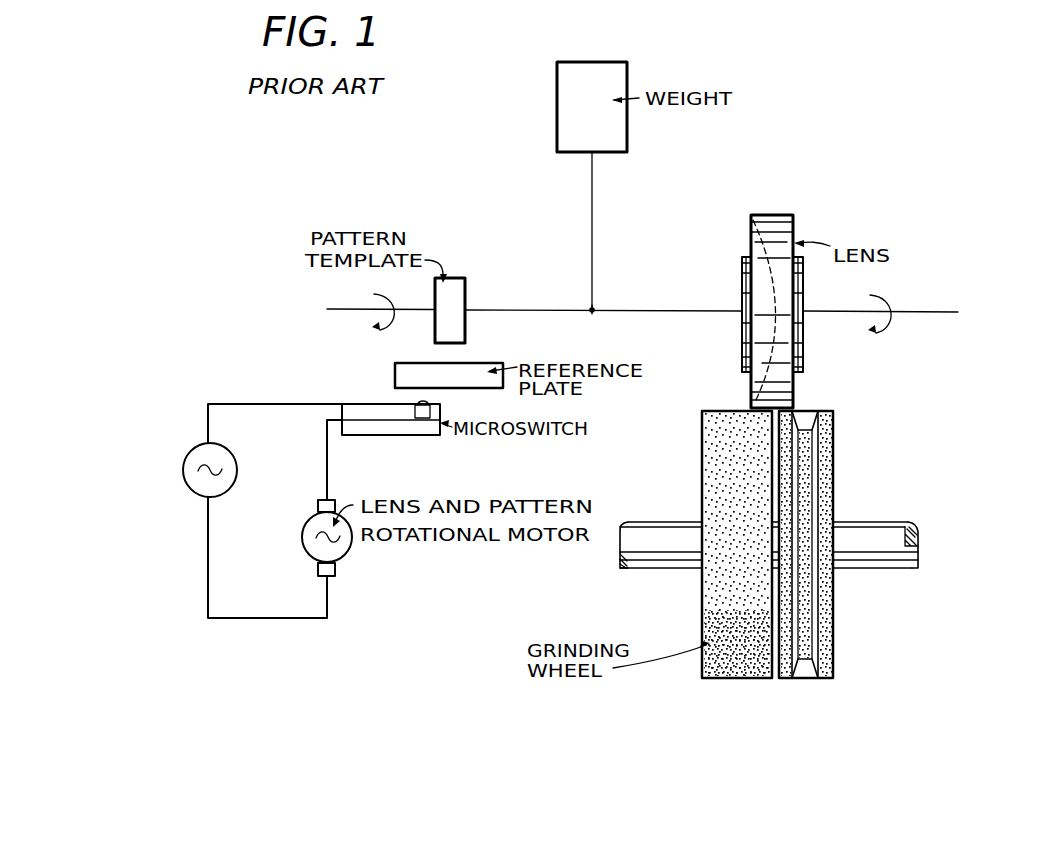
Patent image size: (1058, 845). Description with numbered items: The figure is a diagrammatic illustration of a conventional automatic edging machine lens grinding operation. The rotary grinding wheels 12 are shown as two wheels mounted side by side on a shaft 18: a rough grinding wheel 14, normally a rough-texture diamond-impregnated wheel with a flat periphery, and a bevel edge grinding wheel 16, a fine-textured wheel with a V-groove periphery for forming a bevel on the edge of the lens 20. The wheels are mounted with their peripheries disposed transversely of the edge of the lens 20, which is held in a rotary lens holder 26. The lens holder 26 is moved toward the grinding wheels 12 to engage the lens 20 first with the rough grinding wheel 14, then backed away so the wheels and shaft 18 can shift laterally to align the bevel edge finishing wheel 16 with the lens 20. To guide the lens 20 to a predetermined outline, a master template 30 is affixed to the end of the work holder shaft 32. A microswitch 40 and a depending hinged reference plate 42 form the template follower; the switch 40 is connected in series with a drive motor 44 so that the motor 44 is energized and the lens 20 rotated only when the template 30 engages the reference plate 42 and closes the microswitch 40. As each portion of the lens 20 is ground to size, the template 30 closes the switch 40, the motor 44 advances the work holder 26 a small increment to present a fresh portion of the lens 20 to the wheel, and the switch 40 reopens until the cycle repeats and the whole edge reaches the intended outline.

The rotary grinding wheels 12 is at (839, 462).
The rough grinding wheel 14 is at (720, 492).
The bevel edge grinding wheel 16 is at (810, 634).
The shaft 18 is at (877, 570).
The lens 20 is at (795, 388).
The lens holder 26 is at (742, 272).
The master template 30 is at (467, 328).
The work holder shaft 32 is at (660, 310).
The microswitch 40 is at (429, 442).
The reference plate 42 is at (395, 368).
The drive motor 44 is at (304, 545).